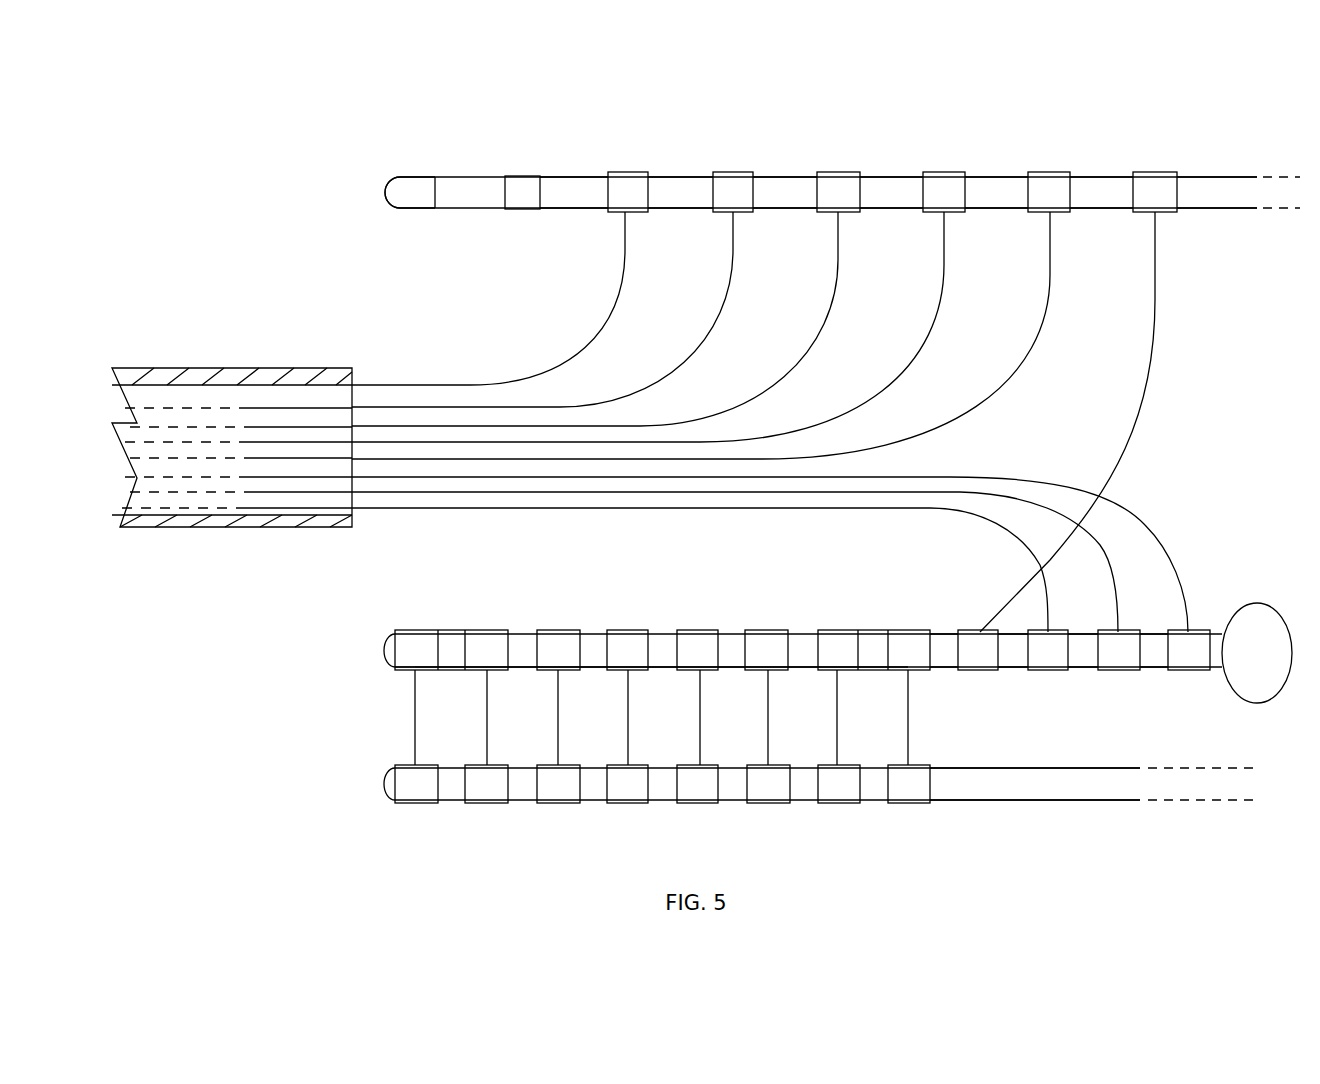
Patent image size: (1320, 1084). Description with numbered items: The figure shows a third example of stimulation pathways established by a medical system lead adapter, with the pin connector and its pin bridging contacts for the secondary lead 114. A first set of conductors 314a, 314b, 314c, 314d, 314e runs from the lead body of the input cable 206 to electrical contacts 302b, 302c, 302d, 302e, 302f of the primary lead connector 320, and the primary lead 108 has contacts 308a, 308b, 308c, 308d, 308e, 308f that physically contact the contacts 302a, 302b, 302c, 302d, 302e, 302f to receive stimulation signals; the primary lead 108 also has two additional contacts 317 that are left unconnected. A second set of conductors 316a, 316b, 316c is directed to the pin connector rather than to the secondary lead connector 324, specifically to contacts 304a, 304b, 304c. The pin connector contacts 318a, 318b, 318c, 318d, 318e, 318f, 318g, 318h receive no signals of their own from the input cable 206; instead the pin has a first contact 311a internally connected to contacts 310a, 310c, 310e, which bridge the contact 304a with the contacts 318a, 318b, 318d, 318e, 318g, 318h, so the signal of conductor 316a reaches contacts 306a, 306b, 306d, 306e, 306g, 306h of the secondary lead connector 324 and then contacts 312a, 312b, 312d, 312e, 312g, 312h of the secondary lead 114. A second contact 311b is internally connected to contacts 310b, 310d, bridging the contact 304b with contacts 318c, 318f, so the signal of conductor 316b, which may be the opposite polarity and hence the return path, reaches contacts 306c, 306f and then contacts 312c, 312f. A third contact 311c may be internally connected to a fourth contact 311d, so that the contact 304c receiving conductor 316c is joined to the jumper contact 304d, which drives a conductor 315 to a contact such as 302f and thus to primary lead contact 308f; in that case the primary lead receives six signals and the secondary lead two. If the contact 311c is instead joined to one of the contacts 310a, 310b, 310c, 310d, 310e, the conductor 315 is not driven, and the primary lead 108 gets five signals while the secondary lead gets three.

The primary lead 108 is at (1222, 177).
The secondary lead 114 is at (1075, 771).
The input cable 206 is at (222, 368).
The electrical contact of primary lead connector 302a is at (600, 208).
The electrical contact of primary lead connector 302b is at (702, 208).
The electrical contact of primary lead connector 302c is at (810, 208).
The electrical contact of primary lead connector 302d is at (918, 208).
The electrical contact of primary lead connector 302e is at (1022, 208).
The electrical contact of primary lead connector 302f is at (1127, 208).
The contact of pin connector 304a is at (1168, 632).
The contact of pin connector 304b is at (1097, 632).
The contact of pin connector 304c is at (1067, 670).
The jumper contact of pin connector 304d is at (960, 670).
The contact of secondary lead connector 306a is at (888, 769).
The contact of secondary lead connector 306b is at (817, 769).
The contact of secondary lead connector 306c is at (747, 770).
The contact of secondary lead connector 306d is at (677, 770).
The contact of secondary lead connector 306e is at (607, 770).
The contact of secondary lead connector 306f is at (538, 770).
The contact of secondary lead connector 306g is at (467, 770).
The contact of secondary lead connector 306h is at (397, 770).
The electrical contact of primary lead 308a is at (636, 172).
The electrical contact of primary lead 308b is at (742, 172).
The electrical contact of primary lead 308c is at (847, 172).
The electrical contact of primary lead 308d is at (952, 172).
The electrical contact of primary lead 308e is at (1057, 172).
The electrical contact of primary lead 308f is at (1162, 172).
The contact of pin 310a is at (873, 632).
The contact of pin 310b is at (767, 632).
The contact of pin 310c is at (657, 632).
The contact of pin 310d is at (548, 632).
The contact of pin 310e is at (452, 632).
The first contact of pin 311a is at (1190, 670).
The second contact of pin 311b is at (1122, 670).
The third contact of pin 311c is at (1038, 670).
The fourth contact of pin 311d is at (970, 645).
The contact of secondary lead 312a is at (913, 784).
The contact of secondary lead 312b is at (843, 784).
The contact of secondary lead 312c is at (773, 784).
The contact of secondary lead 312d is at (703, 784).
The contact of secondary lead 312e is at (633, 784).
The contact of secondary lead 312f is at (563, 784).
The contact of secondary lead 312g is at (493, 784).
The contact of secondary lead 312h is at (422, 784).
The conductor of first set 314a is at (610, 330).
The conductor of first set 314b is at (708, 336).
The conductor of first set 314c is at (823, 332).
The conductor of first set 314d is at (916, 322).
The conductor of first set 314e is at (1029, 330).
The conductor 315 is at (1147, 337).
The conductor of second set 316a is at (1060, 477).
The conductor of second set 316b is at (970, 491).
The additional conductor 316c is at (983, 514).
The additional contacts of primary lead 317 is at (417, 177).
The contact of pin connector 318a is at (878, 670).
The contact of pin connector 318b is at (808, 670).
The contact of pin connector 318c is at (738, 670).
The contact of pin connector 318d is at (668, 670).
The contact of pin connector 318e is at (598, 670).
The contact of pin connector 318f is at (528, 670).
The contact of pin connector 318g is at (453, 670).
The contact of pin connector 318h is at (392, 670).
The primary lead connector 320 is at (350, 192).
The secondary lead connector 324 is at (360, 793).